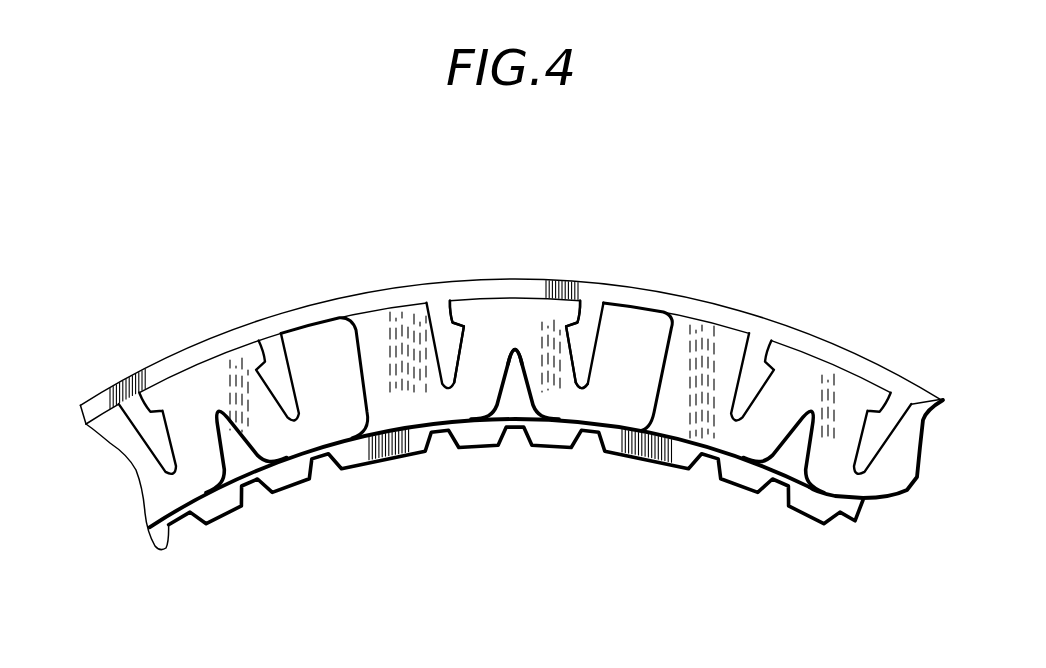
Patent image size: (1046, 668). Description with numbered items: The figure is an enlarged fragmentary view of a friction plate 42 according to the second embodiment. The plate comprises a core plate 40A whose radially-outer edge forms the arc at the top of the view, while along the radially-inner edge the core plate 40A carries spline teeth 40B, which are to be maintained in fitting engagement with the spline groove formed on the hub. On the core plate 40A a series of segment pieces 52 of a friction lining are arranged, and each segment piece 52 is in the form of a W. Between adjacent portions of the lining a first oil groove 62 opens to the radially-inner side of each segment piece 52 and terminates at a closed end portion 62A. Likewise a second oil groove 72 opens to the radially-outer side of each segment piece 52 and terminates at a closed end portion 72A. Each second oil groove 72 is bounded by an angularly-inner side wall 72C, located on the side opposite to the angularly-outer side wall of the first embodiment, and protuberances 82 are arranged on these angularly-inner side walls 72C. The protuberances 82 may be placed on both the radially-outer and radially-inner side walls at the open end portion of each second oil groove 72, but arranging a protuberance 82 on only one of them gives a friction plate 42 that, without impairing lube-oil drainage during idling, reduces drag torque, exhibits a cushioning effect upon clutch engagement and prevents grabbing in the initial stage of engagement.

The friction plate 42 is at (795, 203).
The core plate 40A is at (775, 332).
The spline teeth 40B is at (813, 505).
The segment piece 52 is at (653, 330).
The first oil groove 62 is at (517, 386).
The closed end portion of the first oil groove 62A is at (517, 350).
The second oil groove 72 is at (582, 358).
The closed end portion of the second oil groove 72A is at (586, 392).
The angularly-inner side wall 72C is at (455, 340).
The protuberance 82 is at (457, 300).